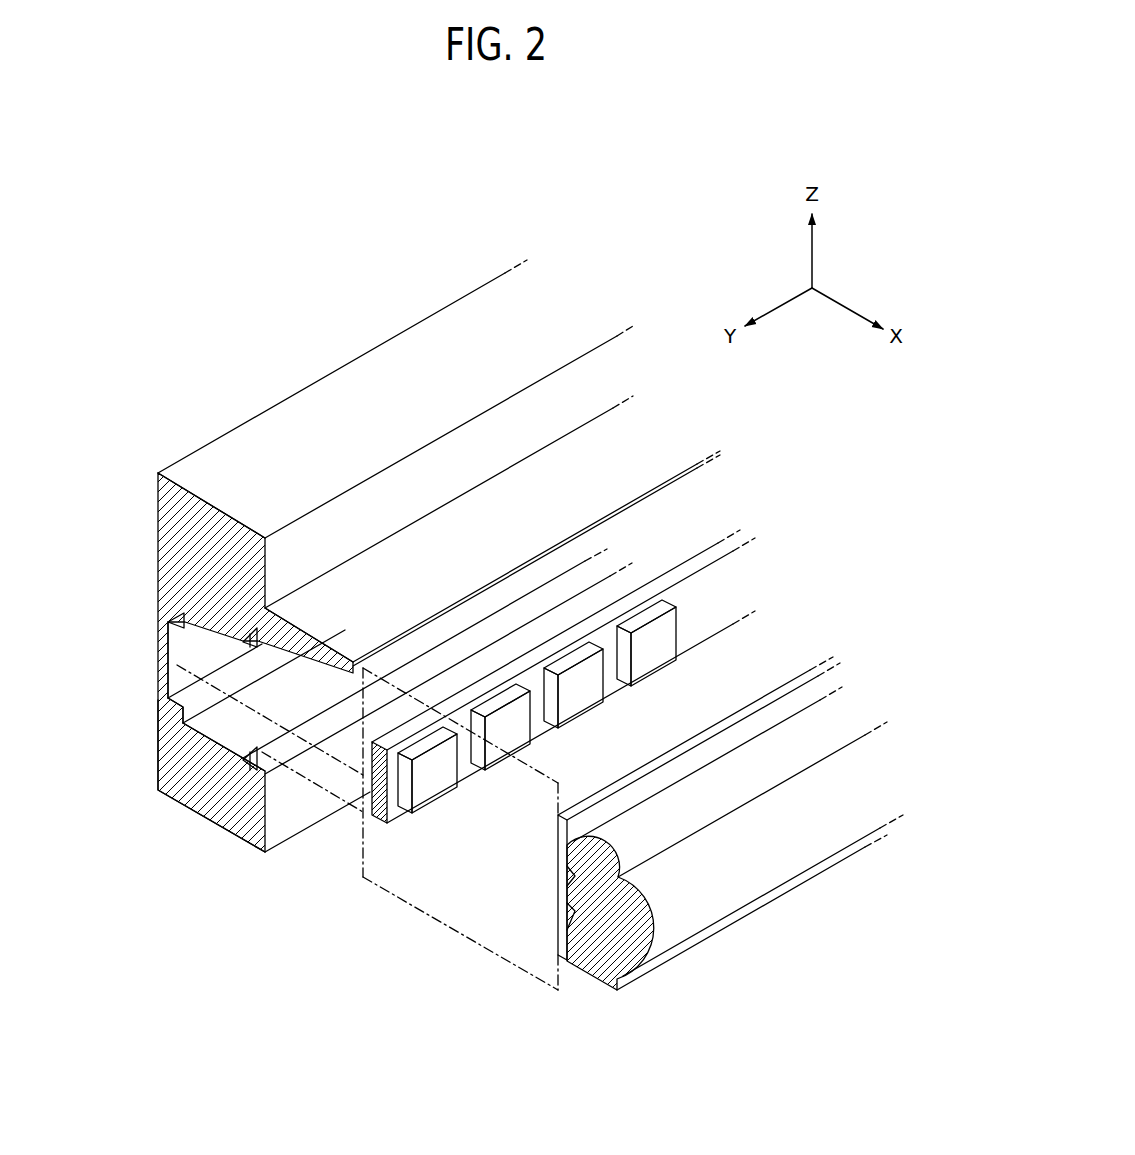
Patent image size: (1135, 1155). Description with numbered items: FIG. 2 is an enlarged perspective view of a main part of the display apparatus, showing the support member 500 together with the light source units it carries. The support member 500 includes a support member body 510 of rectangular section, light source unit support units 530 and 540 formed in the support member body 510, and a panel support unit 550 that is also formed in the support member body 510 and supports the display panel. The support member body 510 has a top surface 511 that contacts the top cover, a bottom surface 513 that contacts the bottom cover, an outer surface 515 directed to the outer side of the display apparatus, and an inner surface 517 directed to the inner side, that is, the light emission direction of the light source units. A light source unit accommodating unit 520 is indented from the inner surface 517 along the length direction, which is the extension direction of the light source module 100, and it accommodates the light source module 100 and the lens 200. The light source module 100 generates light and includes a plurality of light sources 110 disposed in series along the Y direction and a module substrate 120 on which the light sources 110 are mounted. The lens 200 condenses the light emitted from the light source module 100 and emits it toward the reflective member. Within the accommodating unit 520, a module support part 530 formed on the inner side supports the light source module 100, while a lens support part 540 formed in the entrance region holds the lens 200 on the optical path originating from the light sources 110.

The light source module 100 is at (412, 830).
The light sources 110 is at (639, 677).
The module substrate 120 is at (469, 773).
The lens 200 is at (583, 990).
The support member 500 is at (433, 268).
The support member body 510 is at (183, 537).
The top surface 511 is at (286, 464).
The bottom surface 513 is at (183, 808).
The outer surface 515 is at (160, 708).
The inner surface 517 is at (318, 794).
The light source unit accommodating unit 520 is at (228, 724).
The module support part 530 is at (185, 660).
The lens support part 540 is at (243, 642).
The panel support unit 550 is at (497, 545).